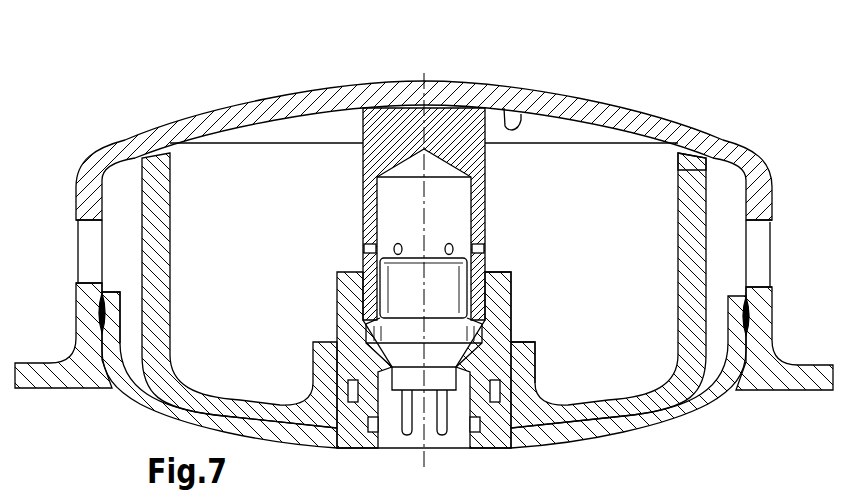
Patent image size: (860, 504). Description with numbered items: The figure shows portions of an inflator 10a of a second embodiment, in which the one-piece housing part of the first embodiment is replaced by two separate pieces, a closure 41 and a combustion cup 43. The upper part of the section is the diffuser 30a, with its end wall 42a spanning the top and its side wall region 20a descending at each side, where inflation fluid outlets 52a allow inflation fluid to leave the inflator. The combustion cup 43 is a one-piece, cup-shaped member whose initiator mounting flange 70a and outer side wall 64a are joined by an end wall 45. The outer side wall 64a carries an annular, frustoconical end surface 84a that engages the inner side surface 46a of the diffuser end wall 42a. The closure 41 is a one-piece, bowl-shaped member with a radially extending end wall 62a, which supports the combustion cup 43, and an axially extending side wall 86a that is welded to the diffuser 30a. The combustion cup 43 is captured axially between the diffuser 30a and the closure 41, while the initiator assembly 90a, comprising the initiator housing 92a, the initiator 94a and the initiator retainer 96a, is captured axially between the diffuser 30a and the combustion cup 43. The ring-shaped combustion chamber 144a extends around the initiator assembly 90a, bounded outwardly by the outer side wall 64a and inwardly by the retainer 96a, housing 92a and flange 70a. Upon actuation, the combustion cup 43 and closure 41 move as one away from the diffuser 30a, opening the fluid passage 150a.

The inflator 10a is at (213, 76).
The cover 20a is at (274, 90).
The diffuser 30a is at (618, 97).
The initiator retainer 96a is at (404, 104).
The inner side surface of the diffuser end wall 46a is at (504, 108).
The diffuser end wall 42a is at (541, 100).
The fluid passage 150a is at (687, 143).
The frustoconical end surface 84a is at (695, 147).
The outer side wall 64a is at (700, 206).
The combustion cup 43 is at (716, 253).
The inflation fluid outlets 52a is at (90, 247).
The combustion chamber 144a is at (275, 256).
The initiator assembly 90a is at (316, 300).
The initiator 94a is at (459, 254).
The initiator housing 92a is at (517, 301).
The initiator mounting flange 70a is at (515, 358).
The end wall 45 is at (603, 403).
The side wall of the closure 86a is at (112, 337).
The end wall of the closure 62a is at (278, 432).
The closure 41 is at (677, 426).